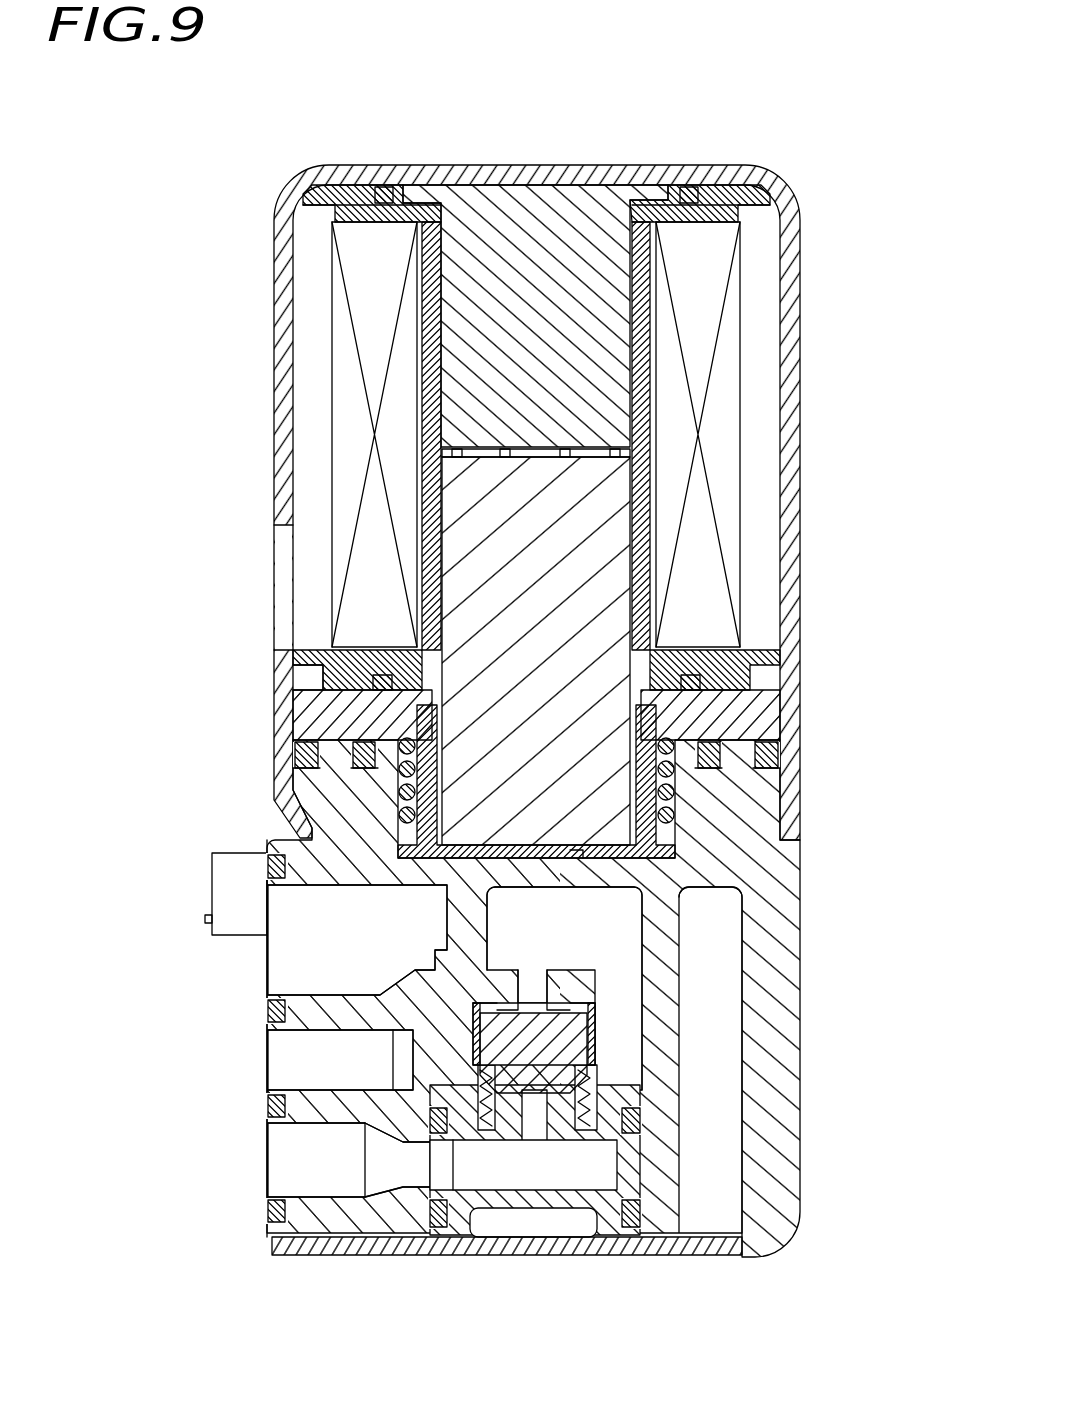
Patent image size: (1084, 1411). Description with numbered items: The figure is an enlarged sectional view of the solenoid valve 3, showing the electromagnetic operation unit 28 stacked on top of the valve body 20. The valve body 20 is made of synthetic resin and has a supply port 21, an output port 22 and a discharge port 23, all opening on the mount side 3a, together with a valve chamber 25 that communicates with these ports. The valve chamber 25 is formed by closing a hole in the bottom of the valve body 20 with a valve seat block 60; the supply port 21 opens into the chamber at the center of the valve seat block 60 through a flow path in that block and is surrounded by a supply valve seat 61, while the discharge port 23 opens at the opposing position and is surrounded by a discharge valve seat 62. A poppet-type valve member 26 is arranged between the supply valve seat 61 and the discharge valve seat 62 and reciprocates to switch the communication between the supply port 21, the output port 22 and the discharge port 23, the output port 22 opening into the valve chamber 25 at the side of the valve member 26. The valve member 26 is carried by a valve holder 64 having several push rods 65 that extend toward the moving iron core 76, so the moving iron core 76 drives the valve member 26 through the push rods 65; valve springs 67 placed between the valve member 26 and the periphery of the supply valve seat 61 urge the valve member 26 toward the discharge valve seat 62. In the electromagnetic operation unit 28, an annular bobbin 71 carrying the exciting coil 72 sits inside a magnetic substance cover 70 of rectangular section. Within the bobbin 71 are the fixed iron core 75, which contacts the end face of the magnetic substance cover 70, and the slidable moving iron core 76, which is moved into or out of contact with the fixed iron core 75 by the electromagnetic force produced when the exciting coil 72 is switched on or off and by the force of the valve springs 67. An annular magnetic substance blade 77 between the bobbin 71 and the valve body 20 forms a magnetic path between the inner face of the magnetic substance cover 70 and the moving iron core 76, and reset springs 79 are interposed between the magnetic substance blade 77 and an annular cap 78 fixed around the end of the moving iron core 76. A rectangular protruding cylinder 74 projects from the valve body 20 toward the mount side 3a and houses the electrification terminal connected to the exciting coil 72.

The solenoid valve 3 is at (440, 140).
The mount side 3a is at (300, 668).
The valve body 20 is at (800, 1018).
The supply port 21 is at (285, 1160).
The output port 22 is at (285, 1060).
The discharge port 23 is at (285, 955).
The valve chamber 25 is at (615, 1095).
The valve member 26 is at (620, 1070).
The electromagnetic operation unit 28 is at (830, 293).
The valve seat block 60 is at (568, 1215).
The supply valve seat 61 is at (548, 1095).
The discharge valve seat 62 is at (528, 1010).
The valve holder 64 is at (550, 1045).
The push rods 65 is at (490, 885).
The valve springs 67 is at (488, 1100).
The magnetic substance cover 70 is at (735, 182).
The bobbin 71 is at (435, 460).
The exciting coil 72 is at (345, 375).
The protruding cylinder 74 is at (240, 853).
The fixed iron core 75 is at (570, 212).
The moving iron core 76 is at (560, 570).
The magnetic substance blade 77 is at (755, 718).
The annular cap 78 is at (660, 795).
The reset springs 79 is at (400, 790).